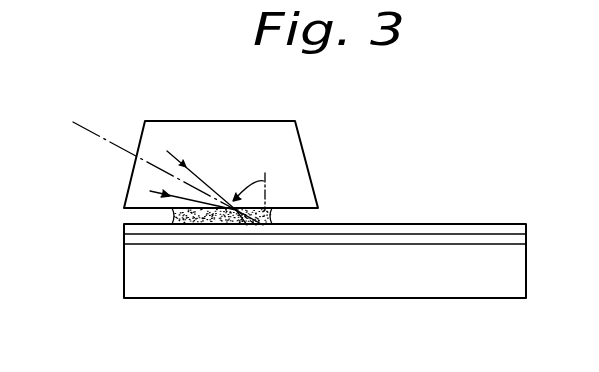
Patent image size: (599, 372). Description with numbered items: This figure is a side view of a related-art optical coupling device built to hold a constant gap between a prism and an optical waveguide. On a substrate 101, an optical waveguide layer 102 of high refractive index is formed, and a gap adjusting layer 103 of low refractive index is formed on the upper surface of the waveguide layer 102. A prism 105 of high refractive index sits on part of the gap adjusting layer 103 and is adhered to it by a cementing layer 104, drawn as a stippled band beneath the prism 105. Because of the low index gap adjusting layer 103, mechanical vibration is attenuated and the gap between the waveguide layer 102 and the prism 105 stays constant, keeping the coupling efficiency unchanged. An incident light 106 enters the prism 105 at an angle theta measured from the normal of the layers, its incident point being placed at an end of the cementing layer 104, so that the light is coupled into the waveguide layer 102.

The substrate 101 is at (308, 288).
The optical waveguide layer 102 is at (392, 238).
The gap adjusting layer 103 is at (453, 230).
The cementing layer 104 is at (173, 213).
The prism 105 is at (263, 130).
The incident light 106 is at (108, 142).